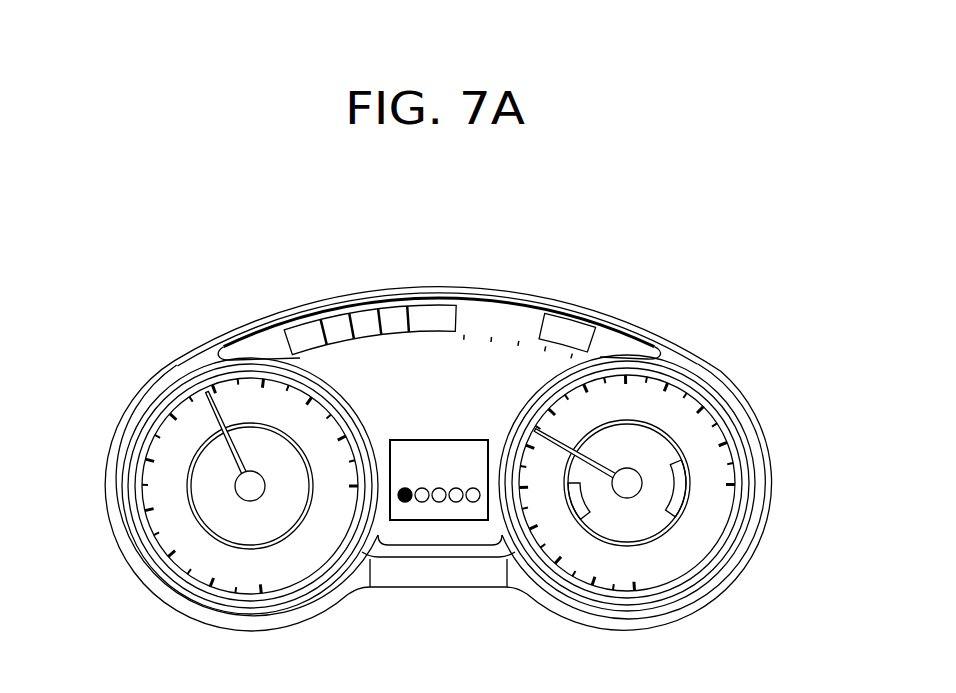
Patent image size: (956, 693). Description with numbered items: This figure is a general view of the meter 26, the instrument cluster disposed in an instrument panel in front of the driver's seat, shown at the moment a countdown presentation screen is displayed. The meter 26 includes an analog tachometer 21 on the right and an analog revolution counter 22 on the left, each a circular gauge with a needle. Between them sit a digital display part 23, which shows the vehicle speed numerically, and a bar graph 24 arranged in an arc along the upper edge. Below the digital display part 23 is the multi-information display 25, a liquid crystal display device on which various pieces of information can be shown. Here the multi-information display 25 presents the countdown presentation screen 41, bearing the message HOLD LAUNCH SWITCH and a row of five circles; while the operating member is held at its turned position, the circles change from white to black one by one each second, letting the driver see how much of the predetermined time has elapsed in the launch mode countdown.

The analog tachometer 21 is at (693, 370).
The analog revolution counter 22 is at (167, 423).
The digital display part 23 is at (400, 380).
The bar graph 24 is at (436, 313).
The multi-information display 25 is at (476, 440).
The meter 26 is at (604, 297).
The countdown presentation screen 41 is at (450, 521).